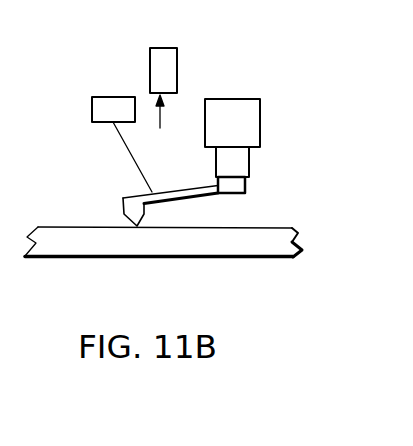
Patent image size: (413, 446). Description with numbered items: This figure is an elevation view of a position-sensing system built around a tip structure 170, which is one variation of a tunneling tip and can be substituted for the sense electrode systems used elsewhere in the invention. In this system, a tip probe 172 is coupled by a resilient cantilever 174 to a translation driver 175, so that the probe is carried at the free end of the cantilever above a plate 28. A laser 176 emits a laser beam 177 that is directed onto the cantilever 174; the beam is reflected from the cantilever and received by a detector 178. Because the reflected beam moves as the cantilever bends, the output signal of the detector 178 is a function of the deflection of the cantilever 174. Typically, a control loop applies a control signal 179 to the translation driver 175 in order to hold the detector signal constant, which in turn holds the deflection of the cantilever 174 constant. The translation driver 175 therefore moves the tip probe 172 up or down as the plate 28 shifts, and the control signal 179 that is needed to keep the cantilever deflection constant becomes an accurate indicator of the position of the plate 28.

The plate 28 is at (67, 258).
The tip structure 170 is at (265, 110).
The tip probe 172 is at (126, 212).
The resilient cantilever 174 is at (187, 199).
The translation driver 175 is at (250, 160).
The laser 176 is at (93, 123).
The laser beam 177 is at (152, 192).
The detector 178 is at (177, 62).
The control signal 179 is at (255, 165).